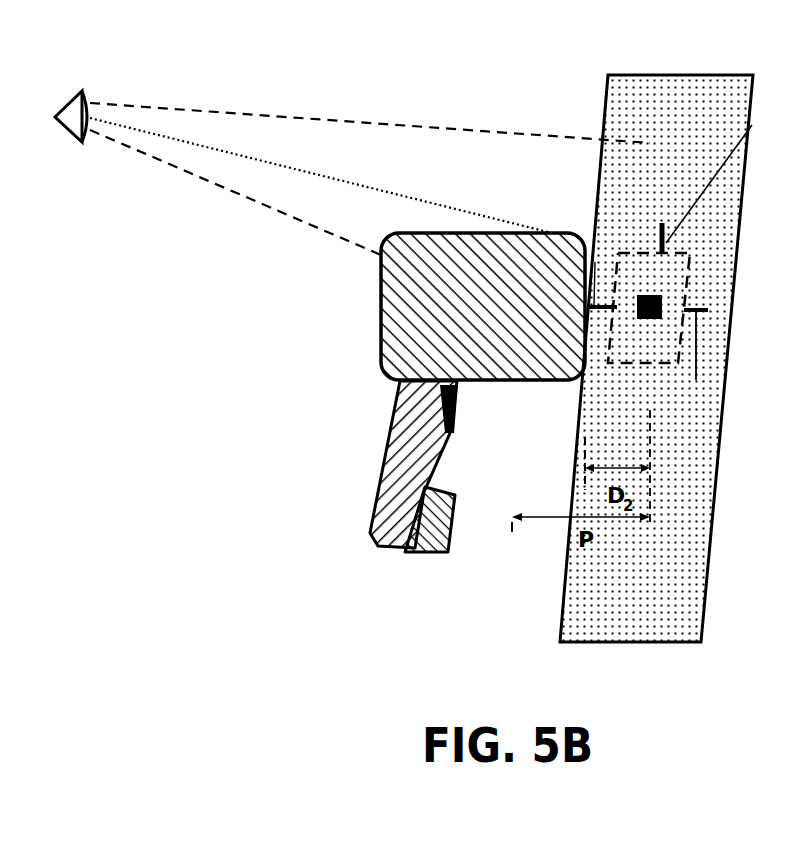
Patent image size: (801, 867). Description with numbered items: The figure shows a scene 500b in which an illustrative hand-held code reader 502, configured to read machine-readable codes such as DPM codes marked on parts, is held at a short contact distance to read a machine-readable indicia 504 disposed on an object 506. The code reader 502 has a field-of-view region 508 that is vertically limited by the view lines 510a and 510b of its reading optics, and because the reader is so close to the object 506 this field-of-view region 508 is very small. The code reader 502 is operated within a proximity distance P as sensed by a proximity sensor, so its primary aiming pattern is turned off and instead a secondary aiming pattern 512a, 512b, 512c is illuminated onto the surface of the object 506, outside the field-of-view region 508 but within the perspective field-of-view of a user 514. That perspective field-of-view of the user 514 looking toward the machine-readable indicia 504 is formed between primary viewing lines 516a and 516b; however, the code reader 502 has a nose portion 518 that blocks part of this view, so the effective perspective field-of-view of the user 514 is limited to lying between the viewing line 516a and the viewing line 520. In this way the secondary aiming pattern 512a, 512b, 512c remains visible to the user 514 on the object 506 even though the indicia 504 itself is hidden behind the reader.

The scene 500b is at (366, 61).
The hand-held code reader 502 is at (380, 320).
The machine-readable indicia 504 is at (660, 296).
The object 506 is at (650, 75).
The field-of-view region 508 is at (729, 167).
The view line 510a is at (612, 250).
The view line 510b is at (613, 330).
The secondary aiming pattern 512a is at (595, 262).
The secondary aiming pattern 512b is at (659, 228).
The secondary aiming pattern 512c is at (694, 363).
The user 514 is at (48, 79).
The primary viewing line 516a is at (230, 113).
The primary viewing line 516b is at (165, 163).
The nose portion 518 is at (548, 232).
The viewing line 520 is at (418, 197).